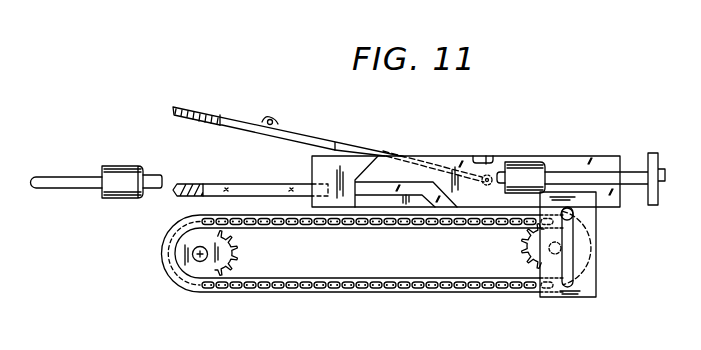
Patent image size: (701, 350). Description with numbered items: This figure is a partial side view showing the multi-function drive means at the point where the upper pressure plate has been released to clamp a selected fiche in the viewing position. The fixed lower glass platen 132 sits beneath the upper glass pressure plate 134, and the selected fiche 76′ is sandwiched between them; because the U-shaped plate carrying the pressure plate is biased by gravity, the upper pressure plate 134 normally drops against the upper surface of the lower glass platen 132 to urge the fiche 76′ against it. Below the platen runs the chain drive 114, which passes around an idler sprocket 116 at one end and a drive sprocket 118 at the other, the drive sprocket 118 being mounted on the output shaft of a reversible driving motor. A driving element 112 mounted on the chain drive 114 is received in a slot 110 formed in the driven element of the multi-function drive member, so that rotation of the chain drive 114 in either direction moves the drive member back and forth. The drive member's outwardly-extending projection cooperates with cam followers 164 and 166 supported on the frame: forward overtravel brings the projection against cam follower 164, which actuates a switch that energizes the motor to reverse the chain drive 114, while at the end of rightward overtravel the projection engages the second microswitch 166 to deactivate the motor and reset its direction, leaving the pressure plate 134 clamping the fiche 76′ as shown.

The upper glass pressure plate 134 is at (215, 91).
The cam follower 164 is at (127, 177).
The lower glass platen 132 is at (178, 200).
The selected fiche 76′ is at (242, 172).
The cam follower (second microswitch) 166 is at (524, 170).
The slot 110 is at (585, 253).
The driving element 112 is at (573, 218).
The drive sprocket 118 is at (519, 246).
The idler sprocket 116 is at (229, 249).
The chain drive 114 is at (333, 298).